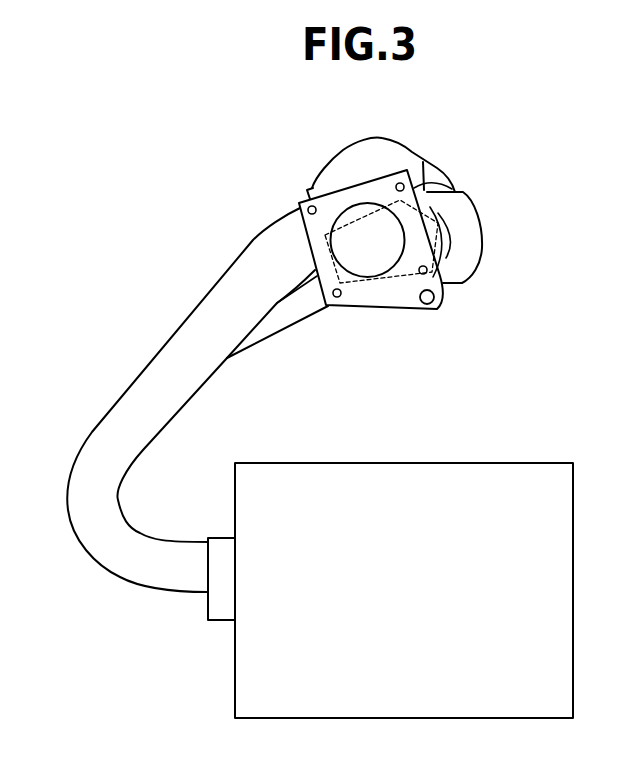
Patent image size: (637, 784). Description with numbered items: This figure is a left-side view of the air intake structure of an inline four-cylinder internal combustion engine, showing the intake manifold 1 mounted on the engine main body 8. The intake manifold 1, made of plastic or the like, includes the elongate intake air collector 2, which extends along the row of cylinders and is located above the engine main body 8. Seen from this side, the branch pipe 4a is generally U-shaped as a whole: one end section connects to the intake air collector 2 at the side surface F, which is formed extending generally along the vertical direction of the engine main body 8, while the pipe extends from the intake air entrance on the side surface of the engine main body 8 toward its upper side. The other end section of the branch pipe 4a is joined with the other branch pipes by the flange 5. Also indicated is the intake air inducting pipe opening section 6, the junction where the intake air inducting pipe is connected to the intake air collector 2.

The intake manifold 1 is at (160, 246).
The intake air collector 2 is at (340, 173).
The branch pipe 4a is at (120, 432).
The flange 5 is at (218, 607).
The intake air inducting pipe opening section 6 is at (433, 207).
The engine main body 8 is at (485, 475).
The side surface F is at (325, 235).